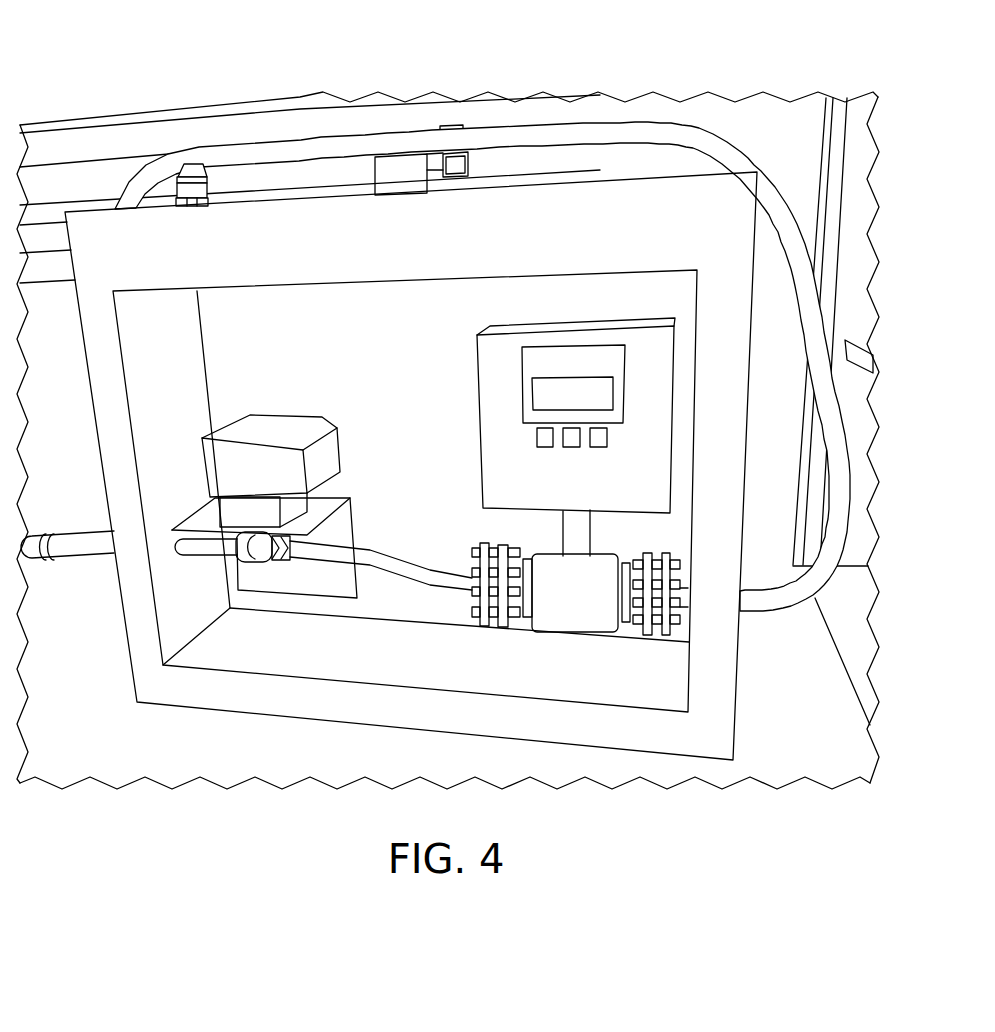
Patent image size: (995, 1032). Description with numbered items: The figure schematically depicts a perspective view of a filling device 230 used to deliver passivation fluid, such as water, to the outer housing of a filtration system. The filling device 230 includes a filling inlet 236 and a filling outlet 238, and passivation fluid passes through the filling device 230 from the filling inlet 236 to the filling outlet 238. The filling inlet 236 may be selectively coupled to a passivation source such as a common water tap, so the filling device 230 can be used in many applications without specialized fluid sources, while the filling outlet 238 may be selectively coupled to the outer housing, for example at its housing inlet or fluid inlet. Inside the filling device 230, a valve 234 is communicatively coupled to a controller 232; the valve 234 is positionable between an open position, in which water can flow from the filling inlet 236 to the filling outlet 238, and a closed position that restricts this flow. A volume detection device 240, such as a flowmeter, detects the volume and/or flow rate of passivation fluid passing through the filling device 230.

The filling device 230 is at (456, 466).
The controller 232 is at (643, 437).
The valve 234 is at (264, 549).
The filling inlet 236 is at (129, 609).
The filling outlet 238 is at (482, 311).
The volume detection device 240 is at (489, 646).